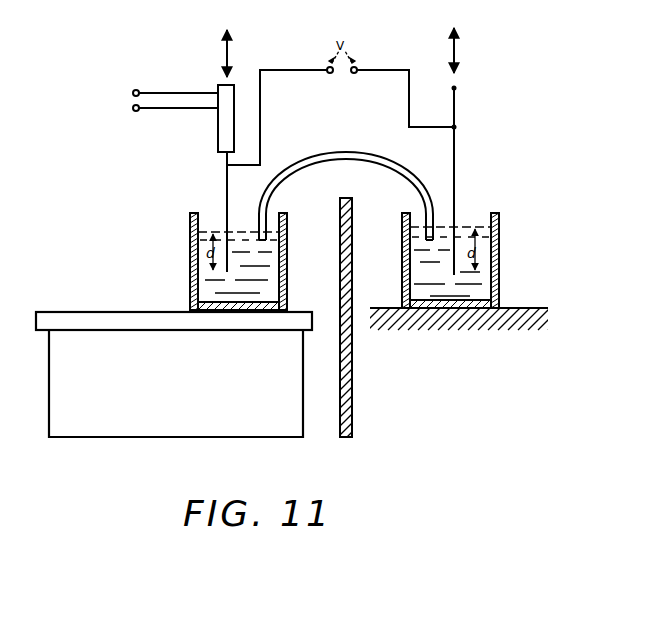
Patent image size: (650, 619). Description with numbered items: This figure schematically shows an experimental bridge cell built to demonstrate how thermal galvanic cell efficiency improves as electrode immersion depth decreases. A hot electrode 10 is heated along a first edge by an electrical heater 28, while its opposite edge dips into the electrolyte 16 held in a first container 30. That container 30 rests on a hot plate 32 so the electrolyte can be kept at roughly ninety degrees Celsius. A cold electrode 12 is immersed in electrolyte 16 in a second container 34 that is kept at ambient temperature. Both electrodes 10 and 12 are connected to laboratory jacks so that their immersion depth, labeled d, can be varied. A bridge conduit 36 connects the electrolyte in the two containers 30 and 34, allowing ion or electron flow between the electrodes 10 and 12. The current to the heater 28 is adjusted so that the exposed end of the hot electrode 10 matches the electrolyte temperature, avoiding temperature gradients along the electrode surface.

The hot electrode 10 is at (227, 181).
The cold electrode 12 is at (456, 143).
The electrolyte 16 is at (199, 284).
The electrical heater 28 is at (236, 96).
The first container 30 is at (190, 255).
The hot plate 32 is at (77, 313).
The second container 34 is at (500, 257).
The bridge conduit 36 is at (370, 156).